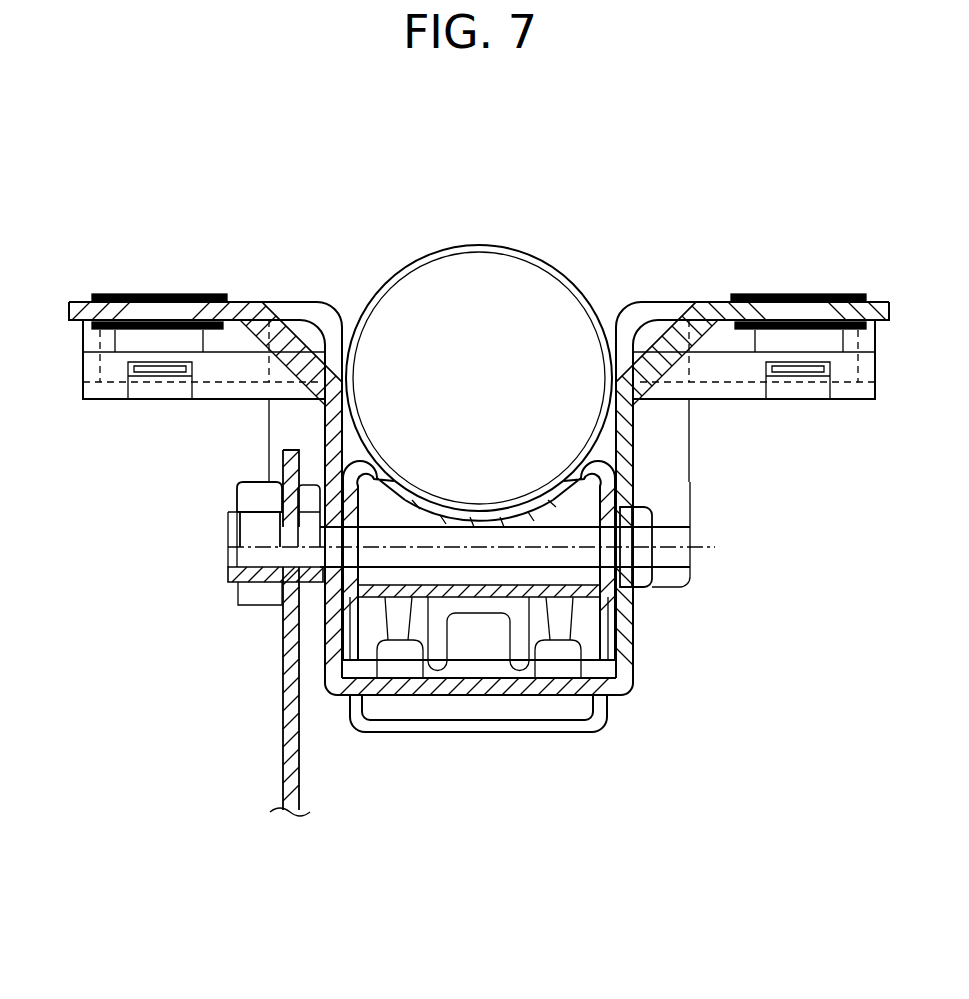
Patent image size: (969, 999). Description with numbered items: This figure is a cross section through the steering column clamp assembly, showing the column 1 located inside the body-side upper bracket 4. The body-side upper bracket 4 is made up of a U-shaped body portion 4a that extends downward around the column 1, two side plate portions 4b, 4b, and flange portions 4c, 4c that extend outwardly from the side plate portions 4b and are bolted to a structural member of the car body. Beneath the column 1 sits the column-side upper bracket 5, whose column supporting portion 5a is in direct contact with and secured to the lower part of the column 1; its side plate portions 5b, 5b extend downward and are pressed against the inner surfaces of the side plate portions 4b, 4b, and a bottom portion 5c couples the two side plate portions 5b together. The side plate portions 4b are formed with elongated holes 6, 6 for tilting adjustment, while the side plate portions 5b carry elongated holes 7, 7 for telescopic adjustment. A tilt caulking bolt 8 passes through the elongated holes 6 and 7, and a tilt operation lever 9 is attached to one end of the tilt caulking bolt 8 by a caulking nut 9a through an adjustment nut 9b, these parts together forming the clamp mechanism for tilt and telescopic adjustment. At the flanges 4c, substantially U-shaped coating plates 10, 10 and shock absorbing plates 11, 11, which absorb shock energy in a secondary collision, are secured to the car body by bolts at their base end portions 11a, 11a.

The column 1 is at (506, 246).
The body-side upper bracket 4 is at (640, 304).
The U-shaped body portion 4a is at (627, 690).
The side plate portions 4b is at (323, 650).
The flange portions 4c is at (258, 302).
The column-side upper bracket 5 is at (404, 473).
The column supporting portion 5a is at (562, 490).
The side plate portions 5b is at (610, 498).
The bottom portion 5c is at (490, 597).
The elongated holes for tilting adjustment 6 is at (237, 498).
The elongated holes for telescopic adjustment 7 is at (340, 546).
The tilt caulking bolt 8 is at (657, 532).
The tilt operation lever 9 is at (283, 757).
The caulking nut 9a is at (320, 605).
The adjustment nut 9b is at (236, 596).
The coating plates 10 is at (113, 294).
The shock absorbing plates 11 is at (110, 375).
The base end portions 11a is at (105, 330).